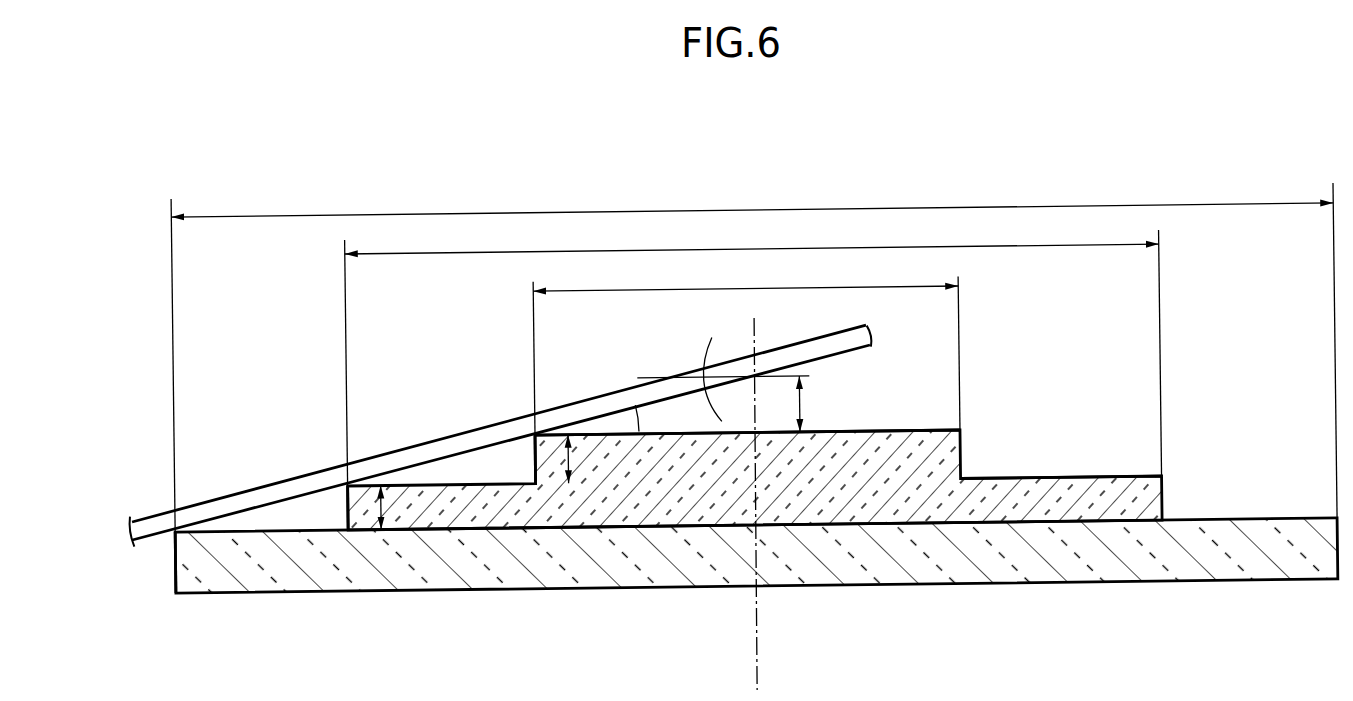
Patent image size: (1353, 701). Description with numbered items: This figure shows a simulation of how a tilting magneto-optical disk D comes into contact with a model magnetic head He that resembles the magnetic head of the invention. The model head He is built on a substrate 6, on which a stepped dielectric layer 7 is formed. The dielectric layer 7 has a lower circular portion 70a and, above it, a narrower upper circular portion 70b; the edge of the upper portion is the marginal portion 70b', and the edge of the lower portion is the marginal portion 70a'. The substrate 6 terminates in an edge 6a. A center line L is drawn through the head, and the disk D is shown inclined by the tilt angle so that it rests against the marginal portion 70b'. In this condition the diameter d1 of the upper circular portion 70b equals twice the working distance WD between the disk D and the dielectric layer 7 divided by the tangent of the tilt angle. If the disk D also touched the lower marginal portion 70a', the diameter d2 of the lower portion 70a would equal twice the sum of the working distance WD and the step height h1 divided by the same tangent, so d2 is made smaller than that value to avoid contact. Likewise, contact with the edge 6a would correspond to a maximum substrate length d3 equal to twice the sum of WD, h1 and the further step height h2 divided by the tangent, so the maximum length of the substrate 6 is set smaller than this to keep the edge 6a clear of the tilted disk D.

The substrate 6 is at (268, 572).
The edge of the substrate 6a is at (173, 525).
The dielectric layer 7 is at (957, 437).
The lower circular portion 70a is at (1114, 466).
The upper circular portion 70b is at (812, 450).
The marginal portion of the lower circular portion 70a' is at (305, 460).
The marginal portion of the dielectric layer 70b' is at (504, 410).
The magneto-optical disk D is at (461, 430).
The model magnetic head He is at (1079, 392).
The center axis L is at (754, 640).
The diameter of the upper circular portion d1 is at (746, 345).
The diameter of the lower circular portion d2 is at (752, 349).
The maximum length of the substrate d3 is at (754, 351).
The working distance WD is at (747, 404).
The height of the upper circular portion h1 is at (589, 458).
The height of the lower circular portion h2 is at (401, 507).